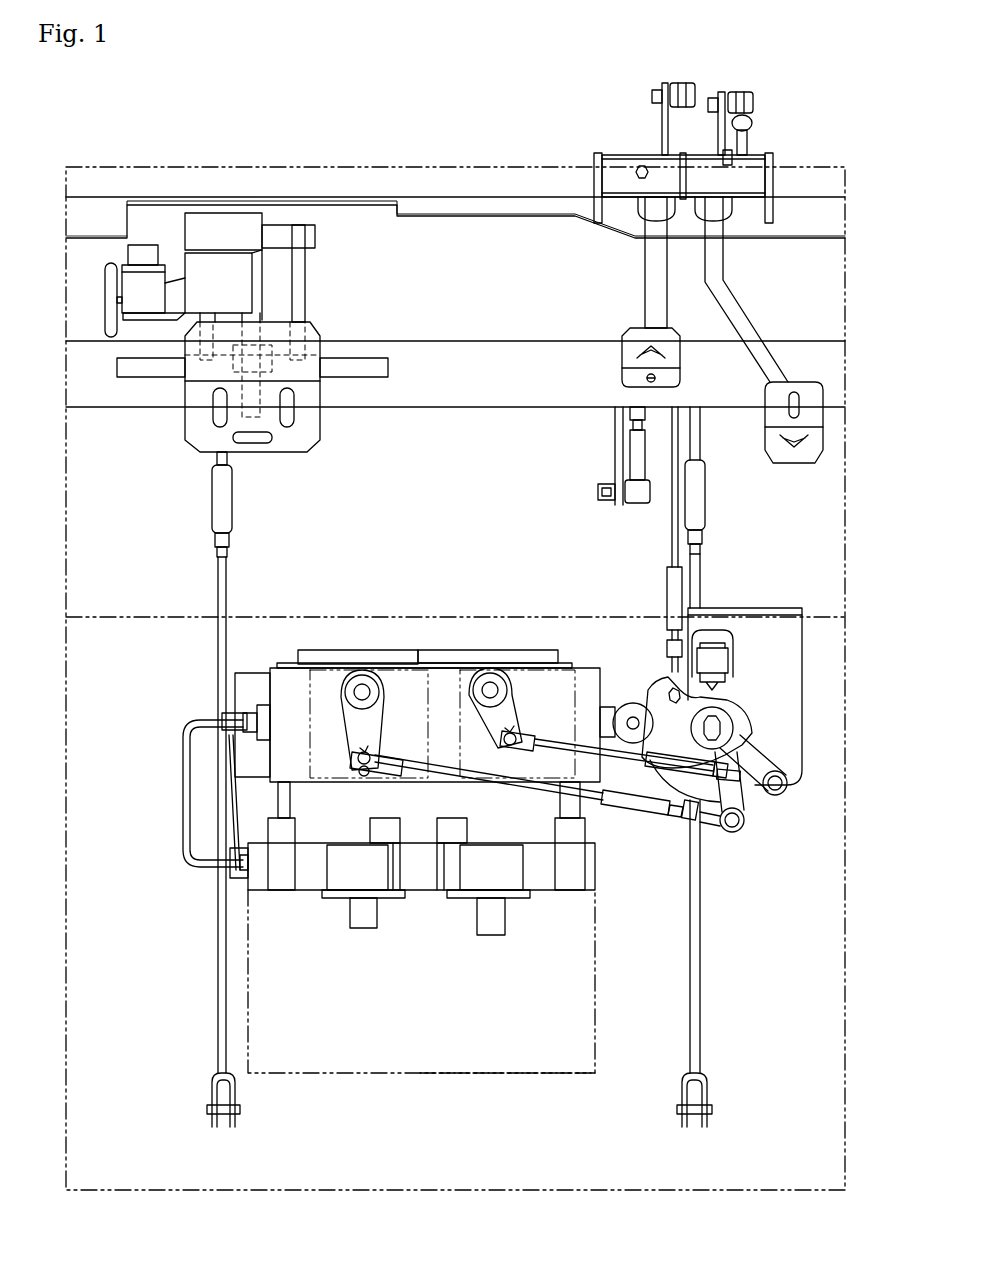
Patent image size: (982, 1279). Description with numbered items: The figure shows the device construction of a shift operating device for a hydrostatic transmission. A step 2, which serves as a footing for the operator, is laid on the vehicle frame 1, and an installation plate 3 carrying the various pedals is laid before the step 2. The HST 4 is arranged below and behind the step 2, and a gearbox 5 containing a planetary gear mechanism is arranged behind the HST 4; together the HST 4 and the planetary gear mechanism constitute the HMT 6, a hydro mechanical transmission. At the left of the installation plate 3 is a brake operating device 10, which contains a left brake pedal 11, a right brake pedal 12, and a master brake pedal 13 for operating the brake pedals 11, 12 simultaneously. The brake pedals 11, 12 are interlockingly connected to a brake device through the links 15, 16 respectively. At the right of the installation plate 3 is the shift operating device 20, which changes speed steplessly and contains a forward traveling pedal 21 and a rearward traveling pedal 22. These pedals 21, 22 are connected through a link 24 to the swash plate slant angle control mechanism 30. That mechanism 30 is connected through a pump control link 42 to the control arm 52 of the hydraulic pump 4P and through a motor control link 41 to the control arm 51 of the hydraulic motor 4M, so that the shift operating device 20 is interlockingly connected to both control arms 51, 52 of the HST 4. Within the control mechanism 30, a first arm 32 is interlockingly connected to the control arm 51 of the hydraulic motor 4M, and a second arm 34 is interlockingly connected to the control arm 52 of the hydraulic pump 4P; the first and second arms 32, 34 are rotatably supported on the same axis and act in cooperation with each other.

The vehicle frame 1 is at (67, 718).
The step 2 is at (145, 618).
The installation plate 3 is at (503, 408).
The HST 4 is at (432, 640).
The hydraulic pump 4P is at (321, 658).
The hydraulic motor 4M is at (471, 658).
The gearbox 5 is at (597, 972).
The HMT 6 is at (563, 1090).
The brake operating device 10 is at (332, 487).
The left brake pedal 11 is at (135, 378).
The right brake pedal 12 is at (343, 377).
The master brake pedal 13 is at (283, 453).
The link 15 is at (218, 1008).
The link 16 is at (700, 1008).
The shift operating device 20 is at (747, 480).
The forward traveling pedal 21 is at (622, 330).
The rearward traveling pedal 22 is at (797, 381).
The link 24 is at (670, 548).
The swash plate slant angle control mechanism 30 is at (767, 850).
The first arm 32 is at (765, 753).
The second arm 34 is at (744, 800).
The motor control link 41 is at (570, 743).
The pump control link 42 is at (433, 775).
The control arm 51 is at (510, 710).
The control arm 52 is at (377, 723).